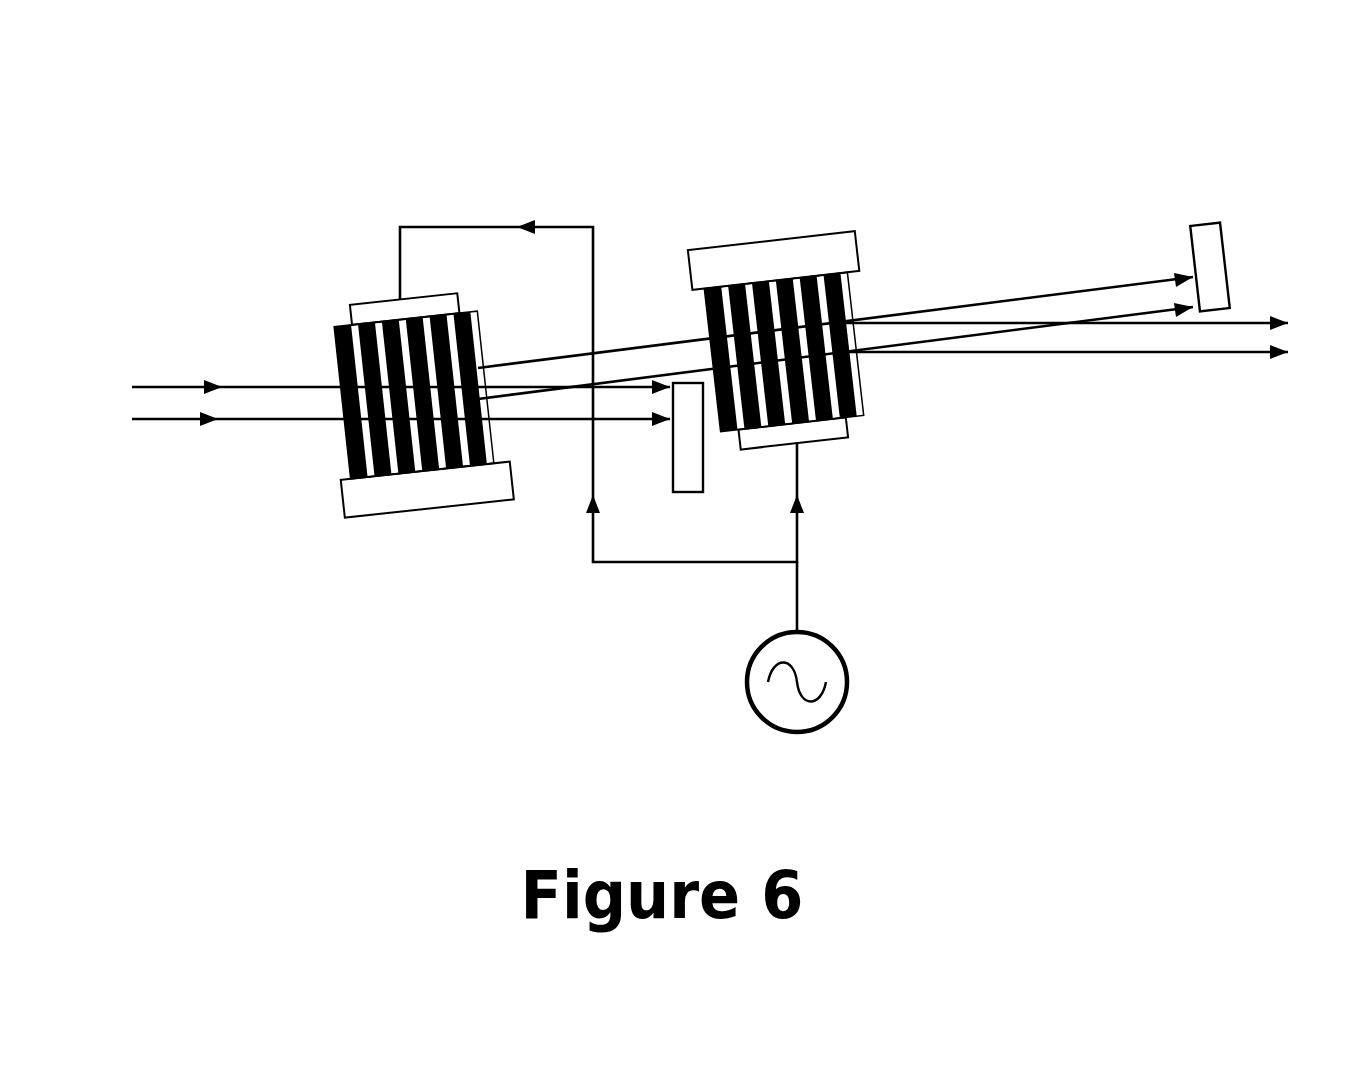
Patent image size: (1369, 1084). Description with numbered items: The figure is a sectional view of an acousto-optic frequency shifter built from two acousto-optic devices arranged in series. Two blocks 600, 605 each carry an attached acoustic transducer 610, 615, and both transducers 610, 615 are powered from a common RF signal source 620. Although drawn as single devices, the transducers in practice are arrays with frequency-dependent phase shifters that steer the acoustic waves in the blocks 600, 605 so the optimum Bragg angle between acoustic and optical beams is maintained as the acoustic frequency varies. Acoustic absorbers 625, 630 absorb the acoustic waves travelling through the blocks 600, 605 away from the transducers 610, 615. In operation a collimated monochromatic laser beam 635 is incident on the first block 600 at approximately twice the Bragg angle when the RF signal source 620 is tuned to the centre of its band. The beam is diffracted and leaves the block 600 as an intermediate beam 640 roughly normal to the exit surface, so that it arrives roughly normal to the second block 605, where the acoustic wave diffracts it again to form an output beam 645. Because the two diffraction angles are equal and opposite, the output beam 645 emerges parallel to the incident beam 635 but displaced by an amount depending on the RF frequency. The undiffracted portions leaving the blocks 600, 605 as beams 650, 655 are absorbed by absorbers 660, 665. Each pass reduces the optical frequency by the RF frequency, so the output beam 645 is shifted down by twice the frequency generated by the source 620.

The block 600 is at (350, 412).
The block 605 is at (842, 319).
The acoustic transducer 610 is at (375, 302).
The acoustic transducer 615 is at (825, 442).
The RF signal source 620 is at (848, 682).
The acoustic absorber 625 is at (375, 522).
The acoustic absorber 630 is at (763, 243).
The laser beam 635 is at (162, 422).
The intermediate beam 640 is at (665, 346).
The output beam 645 is at (1178, 355).
The beam 650 is at (562, 420).
The beam 655 is at (1125, 285).
The acoustic absorber 660 is at (683, 492).
The acoustic absorber 665 is at (1207, 222).